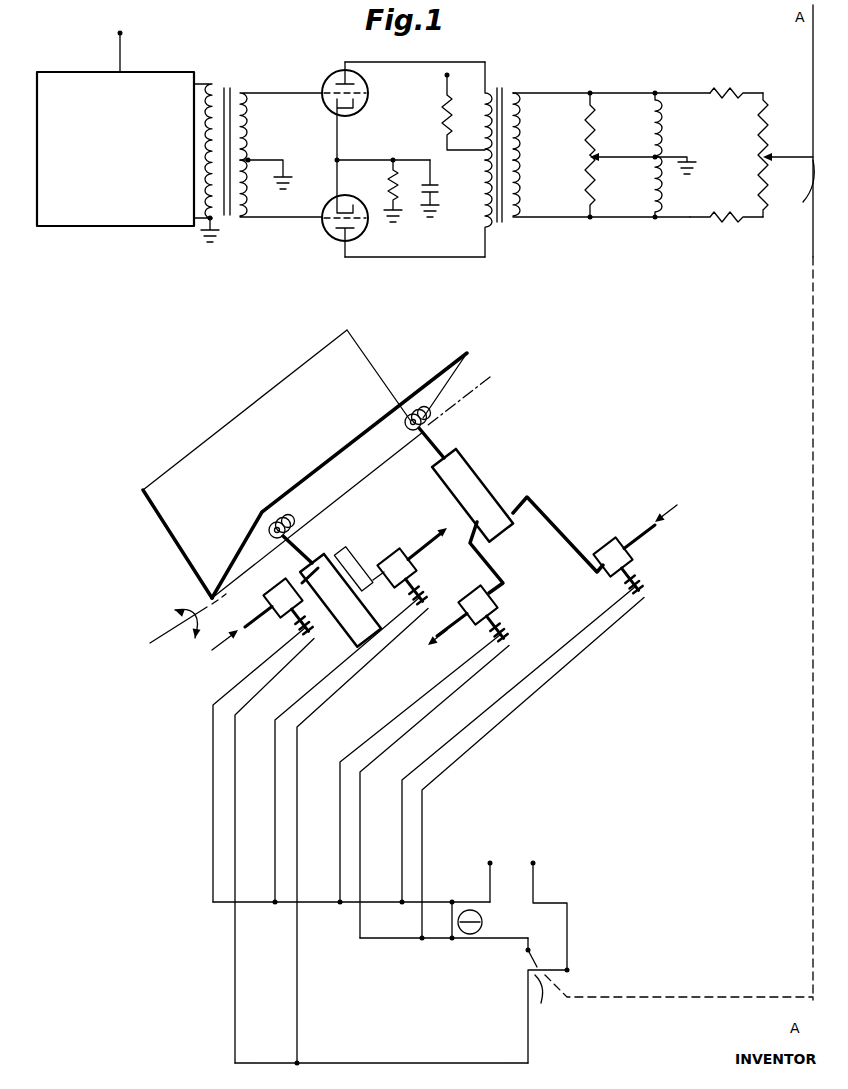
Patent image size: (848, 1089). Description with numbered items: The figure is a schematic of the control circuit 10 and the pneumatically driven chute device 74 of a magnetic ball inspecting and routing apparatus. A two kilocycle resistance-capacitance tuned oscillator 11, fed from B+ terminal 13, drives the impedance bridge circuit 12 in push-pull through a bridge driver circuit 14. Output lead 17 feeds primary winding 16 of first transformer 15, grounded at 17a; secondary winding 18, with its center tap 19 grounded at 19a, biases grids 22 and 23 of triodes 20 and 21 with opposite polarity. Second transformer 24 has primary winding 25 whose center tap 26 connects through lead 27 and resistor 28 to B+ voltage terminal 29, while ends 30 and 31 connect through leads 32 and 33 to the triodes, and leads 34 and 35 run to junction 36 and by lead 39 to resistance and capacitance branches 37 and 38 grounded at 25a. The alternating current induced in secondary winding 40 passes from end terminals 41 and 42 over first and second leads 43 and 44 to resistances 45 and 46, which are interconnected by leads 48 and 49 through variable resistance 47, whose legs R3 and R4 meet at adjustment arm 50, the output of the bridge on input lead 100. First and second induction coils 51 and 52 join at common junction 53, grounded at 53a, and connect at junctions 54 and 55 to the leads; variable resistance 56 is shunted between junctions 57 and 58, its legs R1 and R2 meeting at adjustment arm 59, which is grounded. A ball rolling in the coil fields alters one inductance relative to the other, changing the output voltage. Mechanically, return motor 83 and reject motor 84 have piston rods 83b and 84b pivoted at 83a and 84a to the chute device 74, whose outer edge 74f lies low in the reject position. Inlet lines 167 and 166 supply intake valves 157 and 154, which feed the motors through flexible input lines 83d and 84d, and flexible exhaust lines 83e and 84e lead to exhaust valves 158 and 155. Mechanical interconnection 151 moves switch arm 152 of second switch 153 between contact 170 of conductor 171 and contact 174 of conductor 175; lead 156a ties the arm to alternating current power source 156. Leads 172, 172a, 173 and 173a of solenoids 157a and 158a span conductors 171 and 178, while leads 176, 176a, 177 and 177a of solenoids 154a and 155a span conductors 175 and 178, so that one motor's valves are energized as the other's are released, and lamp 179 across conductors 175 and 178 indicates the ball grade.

The control circuit 10 is at (702, 47).
The resistance-capacitance tuned oscillator 11 is at (142, 80).
The impedance bridge circuit 12 is at (577, 87).
The B+ terminal 13 is at (125, 33).
The bridge driver circuit 14 is at (427, 60).
The first transformer 15 is at (230, 83).
The primary winding 16 is at (206, 152).
The output lead 17 is at (200, 77).
The ground 17a is at (215, 240).
The secondary winding 18 is at (245, 130).
The center tap 19 is at (249, 163).
The ground 19a is at (292, 190).
The triode 20 is at (336, 70).
The triode 21 is at (337, 233).
The grid 22 is at (366, 93).
The grid 23 is at (323, 226).
The second transformer 24 is at (513, 93).
The primary winding 25 is at (480, 180).
The ground 25a is at (400, 217).
The center tap 26 is at (481, 152).
The lead 27 is at (443, 132).
The resistor 28 is at (445, 102).
The B+ voltage terminal 29 is at (450, 73).
The end of primary winding 30 is at (498, 85).
The end of primary winding 31 is at (488, 220).
The lead 32 is at (386, 46).
The lead 33 is at (403, 257).
The lead 34 is at (337, 121).
The lead 35 is at (342, 190).
The junction 36 is at (335, 157).
The resistance branch 37 is at (400, 193).
The capacitance branch 38 is at (443, 172).
The lead 39 is at (365, 160).
The secondary winding 40 is at (518, 137).
The end terminal 41 is at (545, 92).
The end terminal 42 is at (520, 217).
The first lead 43 is at (635, 90).
The second lead 44 is at (618, 222).
The resistance 45 is at (728, 82).
The resistance 46 is at (720, 225).
The variable resistance 47 is at (760, 150).
The lead 48 is at (752, 90).
The lead 49 is at (752, 223).
The adjustment arm 50 is at (775, 153).
The first induction coil 51 is at (652, 112).
The second induction coil 52 is at (650, 183).
The common junction 53 is at (653, 160).
The ground 53a is at (698, 162).
The junction 54 is at (658, 95).
The junction 55 is at (655, 222).
The variable resistance 56 is at (583, 158).
The junction 57 is at (598, 90).
The junction 58 is at (590, 222).
The adjustment arm 59 is at (643, 153).
The resistance leg R1 is at (587, 130).
The resistance leg R2 is at (588, 187).
The resistance leg R3 is at (768, 132).
The resistance leg R4 is at (767, 202).
The input lead 100 is at (795, 192).
The chute device 74 is at (228, 438).
The outer edge 74f is at (262, 393).
The return motor 83 is at (360, 618).
The pivotal connection 83a is at (273, 531).
The piston rod 83b is at (302, 552).
The flexible input line 83d is at (304, 578).
The flexible exhaust line 83e is at (350, 545).
The reject motor 84 is at (483, 492).
The pivotal connection 84a is at (405, 427).
The piston rod 84b is at (457, 417).
The flexible input line 84d is at (547, 517).
The flexible exhaust line 84e is at (497, 567).
The intake valve 154 is at (623, 533).
The solenoid 154a is at (653, 595).
The exhaust valve 155 is at (500, 605).
The solenoid 155a is at (517, 633).
The alternating current power source 156 is at (515, 837).
The lead 156a is at (567, 950).
The intake valve 157 is at (262, 598).
The solenoid 157a is at (303, 633).
The exhaust valve 158 is at (397, 553).
The solenoid 158a is at (433, 597).
The inlet line 166 is at (645, 538).
The inlet line 167 is at (202, 631).
The contact 170 is at (553, 1001).
The conductor 171 is at (470, 1060).
The lead 172 is at (235, 763).
The lead 172a is at (213, 737).
The lead 173 is at (295, 953).
The lead 173a is at (275, 795).
The contact 174 is at (543, 940).
The conductor 175 is at (484, 932).
The lead 176 is at (420, 838).
The lead 176a is at (460, 733).
The lead 177 is at (397, 882).
The lead 177a is at (347, 753).
The conductor 178 is at (435, 897).
The lamp 179 is at (468, 936).
The mechanical interconnection 151 is at (665, 998).
The switch arm 152 is at (525, 975).
The second switch 153 is at (522, 961).